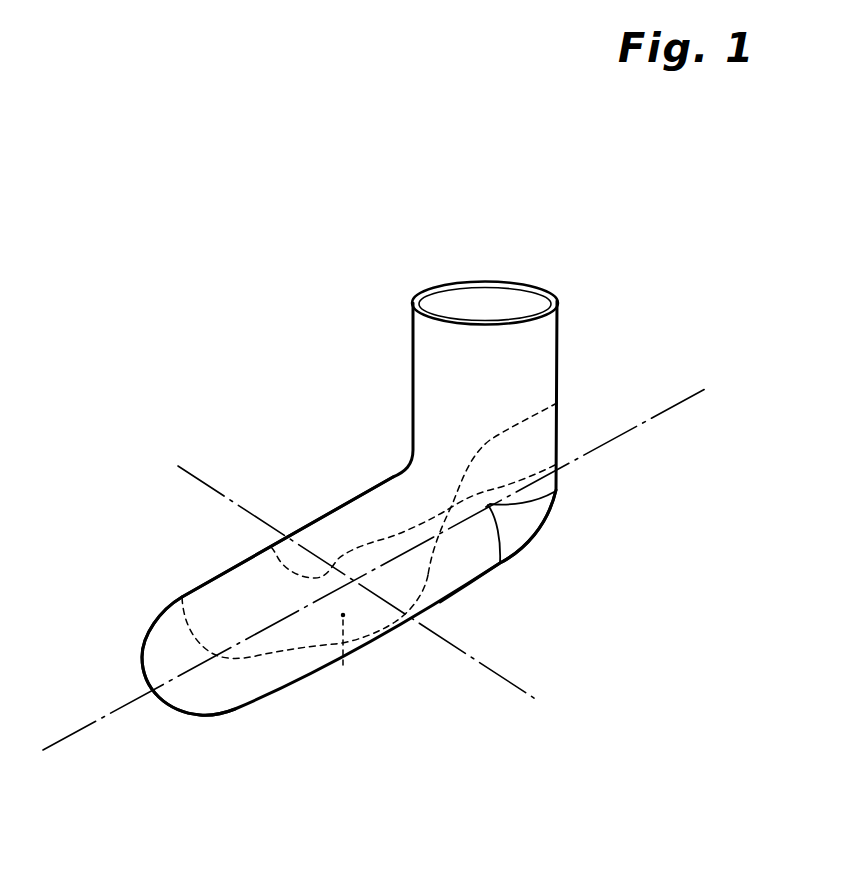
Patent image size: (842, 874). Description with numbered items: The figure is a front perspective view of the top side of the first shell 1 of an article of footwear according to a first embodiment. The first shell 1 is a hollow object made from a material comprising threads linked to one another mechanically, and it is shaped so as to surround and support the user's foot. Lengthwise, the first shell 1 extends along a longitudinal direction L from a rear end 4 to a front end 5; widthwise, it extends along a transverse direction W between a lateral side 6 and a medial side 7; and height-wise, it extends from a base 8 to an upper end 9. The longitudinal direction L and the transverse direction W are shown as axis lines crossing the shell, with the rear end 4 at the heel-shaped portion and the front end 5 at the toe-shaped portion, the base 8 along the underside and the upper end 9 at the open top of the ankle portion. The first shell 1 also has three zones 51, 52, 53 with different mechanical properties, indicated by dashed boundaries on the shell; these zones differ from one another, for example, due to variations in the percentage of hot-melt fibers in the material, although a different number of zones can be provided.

The first shell 1 is at (298, 318).
The rear end 4 is at (556, 510).
The front end 5 is at (140, 672).
The zone 51 is at (238, 688).
The zone 52 is at (237, 590).
The zone 53 is at (527, 370).
The lateral side 6 is at (467, 558).
The medial side 7 is at (345, 497).
The base 8 is at (343, 668).
The upper end 9 is at (518, 284).
The longitudinal direction L is at (63, 742).
The transverse direction W is at (502, 670).